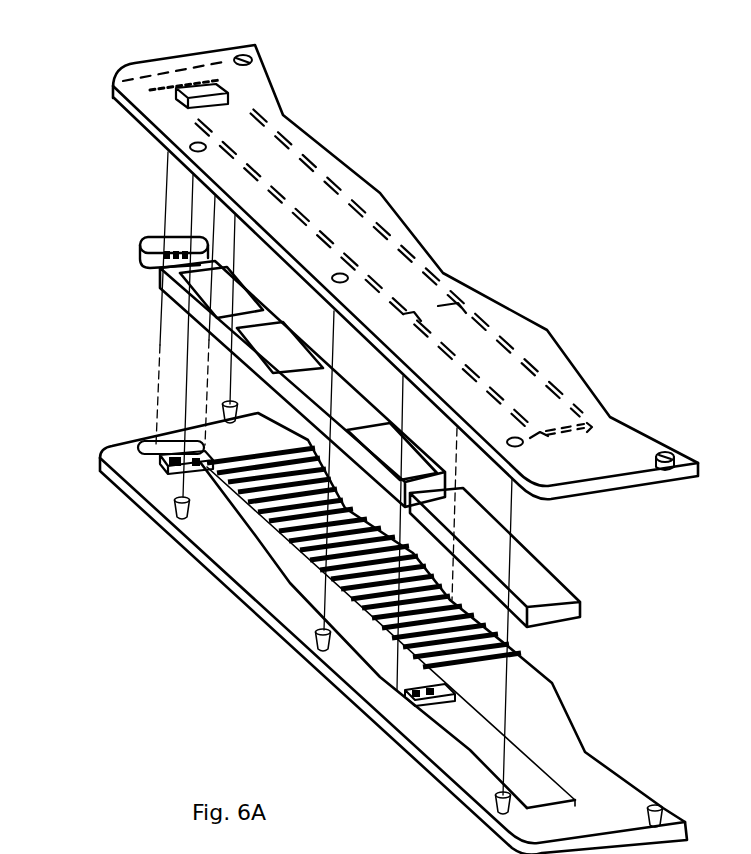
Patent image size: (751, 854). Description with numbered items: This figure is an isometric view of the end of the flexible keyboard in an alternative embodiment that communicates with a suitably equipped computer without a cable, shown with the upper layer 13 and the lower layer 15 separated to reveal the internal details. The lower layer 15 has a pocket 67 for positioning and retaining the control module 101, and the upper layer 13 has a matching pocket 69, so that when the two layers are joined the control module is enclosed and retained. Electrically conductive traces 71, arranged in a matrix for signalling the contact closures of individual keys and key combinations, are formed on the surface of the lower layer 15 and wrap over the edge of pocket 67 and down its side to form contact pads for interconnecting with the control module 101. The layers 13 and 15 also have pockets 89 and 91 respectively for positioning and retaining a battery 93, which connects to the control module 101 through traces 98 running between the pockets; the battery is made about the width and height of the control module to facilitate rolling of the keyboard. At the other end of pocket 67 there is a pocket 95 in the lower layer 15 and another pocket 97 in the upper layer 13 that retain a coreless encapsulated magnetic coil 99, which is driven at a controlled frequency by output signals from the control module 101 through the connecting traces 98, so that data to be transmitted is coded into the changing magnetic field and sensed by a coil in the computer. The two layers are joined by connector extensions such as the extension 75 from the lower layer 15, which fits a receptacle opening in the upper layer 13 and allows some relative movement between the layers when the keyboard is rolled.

The upper layer 13 is at (493, 318).
The lower layer 15 is at (552, 728).
The pocket 67 is at (272, 565).
The matching pocket 69 is at (295, 180).
The electrically conductive traces 71 is at (342, 509).
The extension 75 is at (653, 807).
The pocket 89 is at (520, 372).
The pocket 91 is at (480, 748).
The battery 93 is at (542, 578).
The pocket 95 is at (187, 450).
The pocket 97 is at (165, 78).
The connecting traces 98 is at (157, 445).
The coreless encapsulated magnetic coil 99 is at (152, 248).
The control module 101 is at (165, 278).